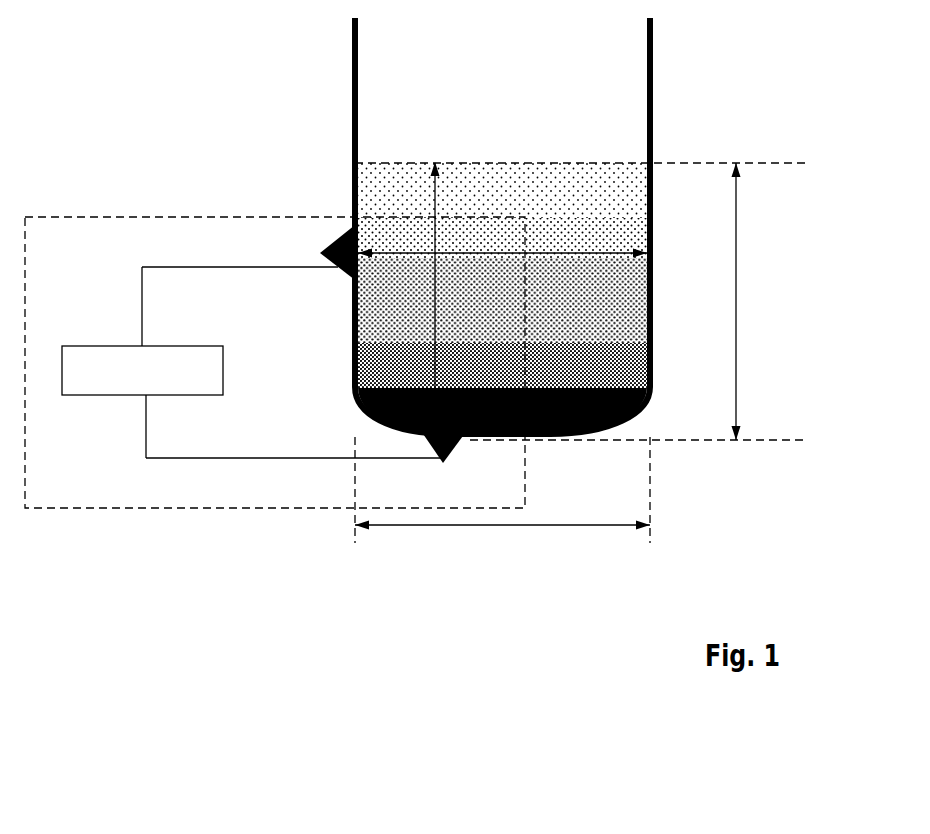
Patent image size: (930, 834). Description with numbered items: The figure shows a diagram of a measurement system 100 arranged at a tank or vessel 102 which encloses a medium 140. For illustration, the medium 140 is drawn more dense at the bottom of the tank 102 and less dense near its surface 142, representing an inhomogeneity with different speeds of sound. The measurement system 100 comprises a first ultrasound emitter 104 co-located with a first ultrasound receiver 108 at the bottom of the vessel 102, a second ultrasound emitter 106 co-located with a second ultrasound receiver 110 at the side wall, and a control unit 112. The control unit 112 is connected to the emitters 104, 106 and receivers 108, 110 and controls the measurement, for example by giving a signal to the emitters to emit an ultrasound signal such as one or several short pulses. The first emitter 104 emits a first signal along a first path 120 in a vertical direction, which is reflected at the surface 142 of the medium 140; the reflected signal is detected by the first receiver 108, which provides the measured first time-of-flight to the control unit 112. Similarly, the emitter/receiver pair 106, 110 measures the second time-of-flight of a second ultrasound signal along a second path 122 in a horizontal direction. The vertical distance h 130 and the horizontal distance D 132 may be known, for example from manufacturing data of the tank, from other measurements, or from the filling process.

The measurement system 100 is at (122, 217).
The tank or vessel 102 is at (537, 233).
The first ultrasound emitter 104 is at (325, 464).
The first ultrasound receiver 108 is at (475, 470).
The second ultrasound emitter 106 is at (248, 284).
The second ultrasound receiver 110 is at (347, 281).
The control unit 112 is at (120, 345).
The first path 120 is at (438, 182).
The second path 122 is at (640, 250).
The distance h 130 is at (736, 260).
The distance D 132 is at (540, 525).
The medium 140 is at (532, 210).
The surface 142 is at (390, 162).